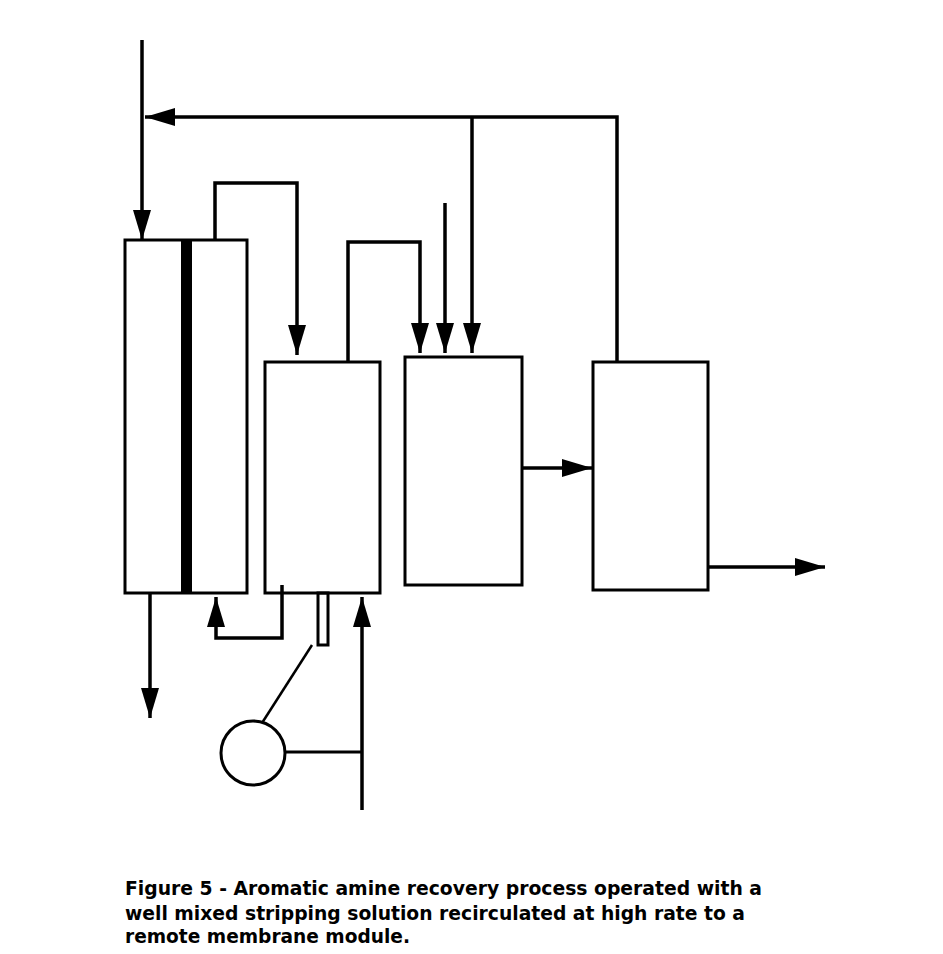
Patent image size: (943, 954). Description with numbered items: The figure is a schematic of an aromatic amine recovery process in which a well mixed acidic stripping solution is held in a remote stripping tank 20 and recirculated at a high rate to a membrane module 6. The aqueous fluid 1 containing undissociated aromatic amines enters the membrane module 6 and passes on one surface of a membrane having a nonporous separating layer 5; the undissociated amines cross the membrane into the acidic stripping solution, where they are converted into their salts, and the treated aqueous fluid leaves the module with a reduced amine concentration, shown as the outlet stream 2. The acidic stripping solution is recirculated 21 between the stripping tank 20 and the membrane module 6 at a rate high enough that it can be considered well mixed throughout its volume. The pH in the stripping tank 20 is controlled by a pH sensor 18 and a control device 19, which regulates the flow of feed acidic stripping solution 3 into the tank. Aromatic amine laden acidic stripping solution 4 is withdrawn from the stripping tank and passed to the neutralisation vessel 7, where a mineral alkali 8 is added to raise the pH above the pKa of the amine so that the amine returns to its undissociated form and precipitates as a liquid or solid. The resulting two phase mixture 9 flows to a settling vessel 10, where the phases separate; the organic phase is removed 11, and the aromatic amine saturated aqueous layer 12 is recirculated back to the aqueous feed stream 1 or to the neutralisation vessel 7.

The aqueous fluid 1 is at (146, 125).
The treated feed outlet stream 2 is at (121, 655).
The acidic stripping solution 3 is at (370, 719).
The aromatic amine laden acidic stripping solution 4 is at (384, 284).
The nonporous separating layer 5 is at (180, 380).
The membrane module 6 is at (126, 468).
The neutralisation vessel 7 is at (463, 471).
The mineral alkali 8 is at (450, 265).
The two phase mixture 9 is at (557, 450).
The settling vessel 10 is at (650, 476).
The organic phase removal 11 is at (766, 548).
The aromatic amine saturated aqueous layer 12 is at (407, 239).
The pH sensor 18 is at (328, 639).
The control device 19 is at (291, 715).
The stripping tank 20 is at (322, 477).
The recirculation of acidic stripping solution 21 is at (256, 254).